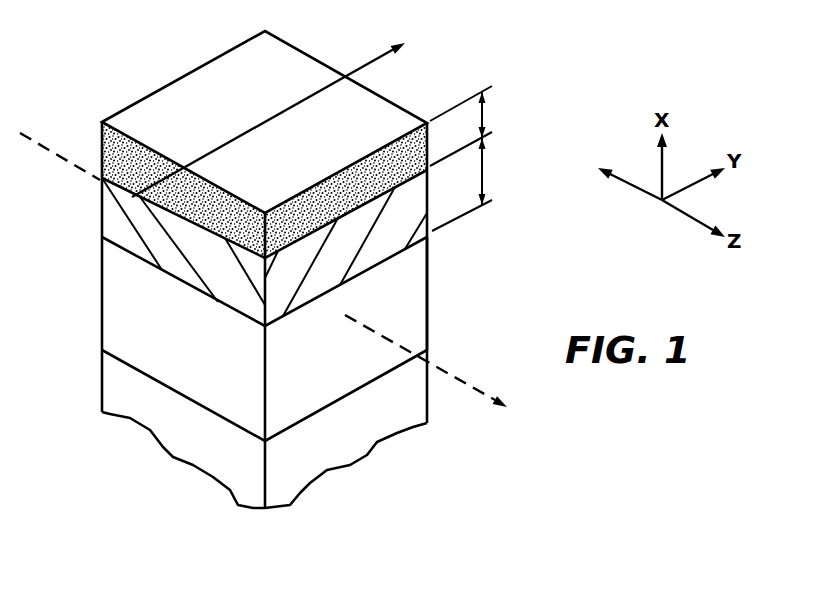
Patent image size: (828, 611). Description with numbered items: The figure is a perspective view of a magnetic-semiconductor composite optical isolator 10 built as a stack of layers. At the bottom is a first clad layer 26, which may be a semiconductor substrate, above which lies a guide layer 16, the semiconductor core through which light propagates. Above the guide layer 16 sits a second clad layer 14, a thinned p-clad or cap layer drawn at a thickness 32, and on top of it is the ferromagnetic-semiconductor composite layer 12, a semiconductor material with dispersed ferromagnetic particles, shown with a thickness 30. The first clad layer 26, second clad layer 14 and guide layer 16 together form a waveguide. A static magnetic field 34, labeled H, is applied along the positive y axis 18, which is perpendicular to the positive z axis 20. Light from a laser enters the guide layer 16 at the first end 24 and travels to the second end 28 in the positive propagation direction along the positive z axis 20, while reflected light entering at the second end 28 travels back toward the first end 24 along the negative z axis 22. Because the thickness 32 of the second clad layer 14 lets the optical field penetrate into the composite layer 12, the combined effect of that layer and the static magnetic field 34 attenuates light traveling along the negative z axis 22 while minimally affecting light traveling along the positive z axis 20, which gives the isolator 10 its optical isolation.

The magnetic-semiconductor composite optical isolator 10 is at (152, 50).
The ferromagnetic-semiconductor composite layer 12 is at (101, 134).
The second clad layer 14 is at (101, 206).
The guide layer 16 is at (101, 323).
The positive y axis 18 is at (688, 186).
The positive z axis 20 is at (690, 216).
The negative z axis 22 is at (630, 185).
The first end 24 is at (126, 283).
The first clad layer 26 is at (101, 383).
The second end 28 is at (411, 297).
The thickness of the FC layer 30 is at (486, 120).
The thickness of the second clad layer 32 is at (485, 172).
The static magnetic field 34 is at (266, 122).